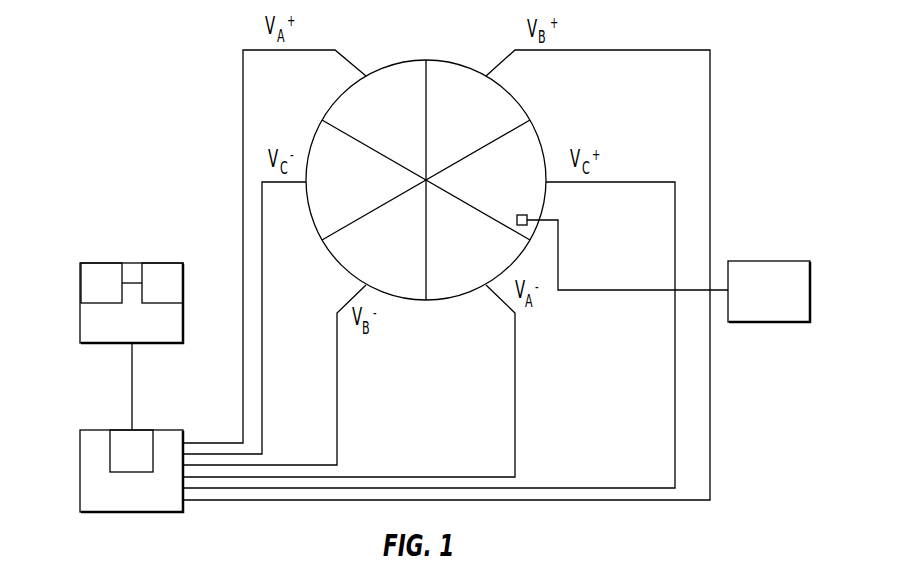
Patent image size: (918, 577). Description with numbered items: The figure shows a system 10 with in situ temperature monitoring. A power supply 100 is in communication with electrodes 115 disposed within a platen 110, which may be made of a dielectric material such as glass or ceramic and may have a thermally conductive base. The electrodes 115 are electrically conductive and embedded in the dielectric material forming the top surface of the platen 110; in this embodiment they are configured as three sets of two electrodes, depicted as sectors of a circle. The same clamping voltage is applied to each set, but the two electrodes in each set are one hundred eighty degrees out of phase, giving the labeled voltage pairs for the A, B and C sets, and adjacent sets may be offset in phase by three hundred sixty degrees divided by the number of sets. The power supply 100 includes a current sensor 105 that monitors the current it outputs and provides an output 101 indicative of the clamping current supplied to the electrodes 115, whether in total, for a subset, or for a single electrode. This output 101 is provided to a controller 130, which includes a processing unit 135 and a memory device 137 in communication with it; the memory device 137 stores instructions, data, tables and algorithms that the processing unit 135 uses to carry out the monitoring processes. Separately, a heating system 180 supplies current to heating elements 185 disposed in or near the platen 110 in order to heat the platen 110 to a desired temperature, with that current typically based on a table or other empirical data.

The system 10 is at (158, 146).
The power supply 100 is at (131, 471).
The output 101 is at (130, 415).
The current sensor 105 is at (131, 451).
The platen 110 is at (403, 60).
The electrodes 115 is at (478, 120).
The controller 130 is at (80, 322).
The processing unit 135 is at (101, 283).
The memory device 137 is at (162, 283).
The heating system 180 is at (769, 291).
The heating elements 185 is at (524, 214).